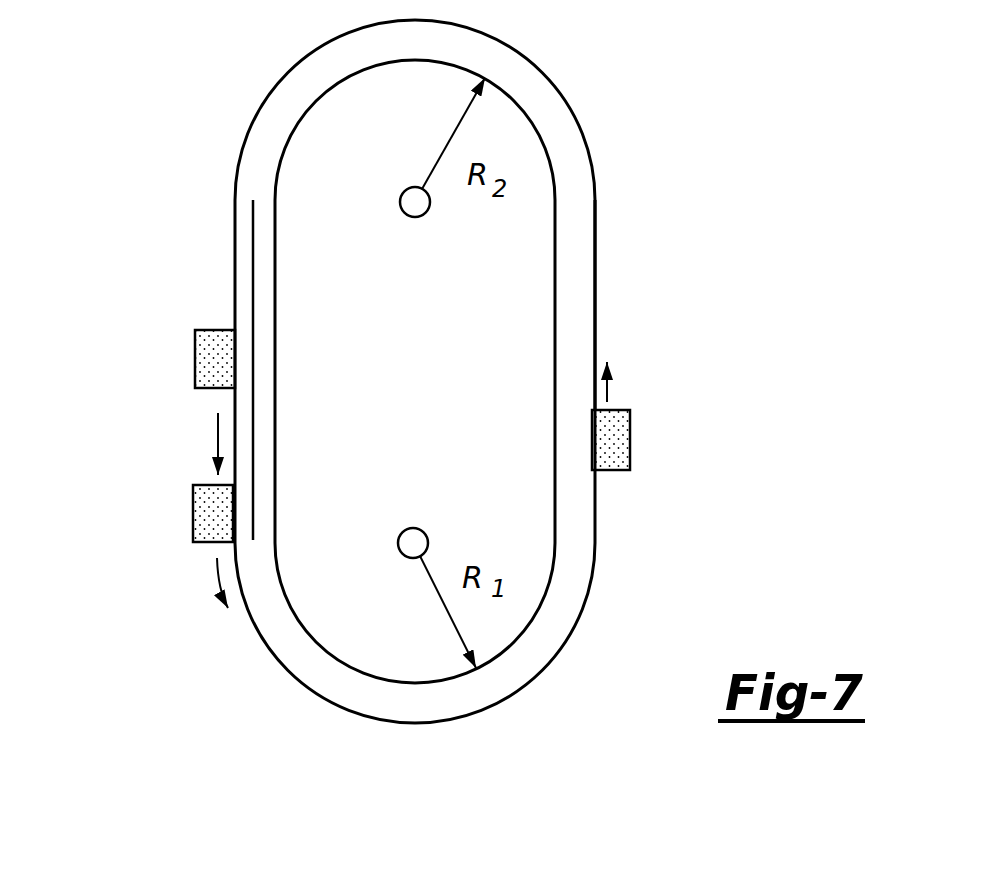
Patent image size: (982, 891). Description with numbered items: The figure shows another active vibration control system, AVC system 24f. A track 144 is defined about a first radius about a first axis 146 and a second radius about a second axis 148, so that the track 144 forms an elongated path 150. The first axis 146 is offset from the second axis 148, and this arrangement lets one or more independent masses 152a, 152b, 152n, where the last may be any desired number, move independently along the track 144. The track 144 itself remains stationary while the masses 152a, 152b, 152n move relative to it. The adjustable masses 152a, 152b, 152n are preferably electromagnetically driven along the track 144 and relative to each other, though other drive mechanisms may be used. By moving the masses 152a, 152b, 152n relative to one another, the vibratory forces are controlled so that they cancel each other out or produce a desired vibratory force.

The AVC system 24f is at (672, 123).
The elongated path 150 is at (613, 232).
The track 144 is at (594, 304).
The second axis 148 is at (413, 217).
The first axis 146 is at (413, 528).
The independent mass 152a is at (630, 452).
The independent mass 152b is at (195, 343).
The independent mass 152n is at (193, 509).